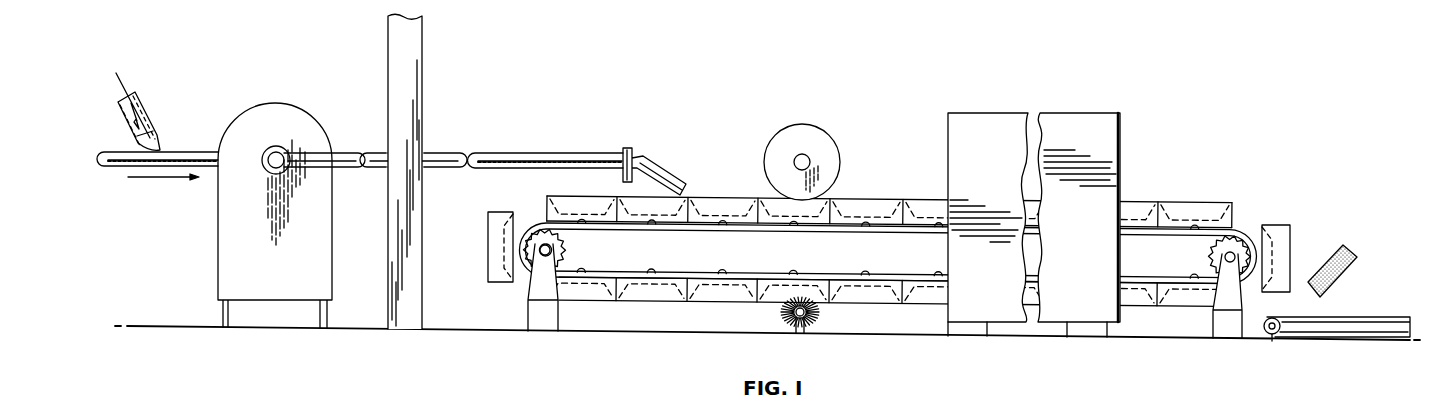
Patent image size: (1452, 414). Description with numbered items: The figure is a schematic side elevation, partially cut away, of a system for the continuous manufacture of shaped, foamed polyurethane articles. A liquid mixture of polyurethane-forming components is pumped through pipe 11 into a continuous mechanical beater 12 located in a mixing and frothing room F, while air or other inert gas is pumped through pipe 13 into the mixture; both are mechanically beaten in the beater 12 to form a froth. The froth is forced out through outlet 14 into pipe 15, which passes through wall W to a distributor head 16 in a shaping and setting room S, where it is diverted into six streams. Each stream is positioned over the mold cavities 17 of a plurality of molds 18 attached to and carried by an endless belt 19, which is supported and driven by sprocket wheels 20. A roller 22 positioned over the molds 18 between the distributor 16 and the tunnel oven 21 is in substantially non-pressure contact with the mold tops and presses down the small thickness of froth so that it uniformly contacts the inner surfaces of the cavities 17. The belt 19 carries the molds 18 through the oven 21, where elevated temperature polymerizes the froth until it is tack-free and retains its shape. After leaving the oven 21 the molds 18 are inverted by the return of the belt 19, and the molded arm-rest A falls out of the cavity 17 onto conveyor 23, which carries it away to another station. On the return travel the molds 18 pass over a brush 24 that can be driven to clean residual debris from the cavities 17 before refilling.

The pipe 11 is at (105, 164).
The continuous mechanical beater 12 is at (218, 227).
The pipe 13 is at (141, 104).
The outlet 14 is at (264, 152).
The pipe 15 is at (598, 163).
The distributor head 16 is at (656, 176).
The mold cavities 17 is at (617, 199).
The molds 18 is at (688, 218).
The endless belt 19 is at (820, 229).
The sprocket wheels 20 is at (568, 249).
The tunnel oven 21 is at (995, 118).
The roller 22 is at (833, 144).
The conveyor 23 is at (1380, 316).
The brush 24 is at (822, 313).
The arm-rest A is at (1349, 246).
The wall W is at (424, 98).
The mixing and frothing room F is at (366, 234).
The shaping and setting room S is at (452, 234).